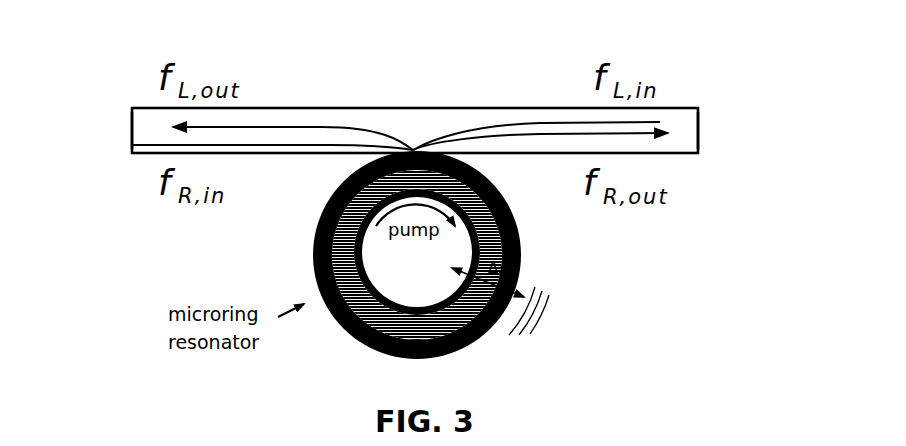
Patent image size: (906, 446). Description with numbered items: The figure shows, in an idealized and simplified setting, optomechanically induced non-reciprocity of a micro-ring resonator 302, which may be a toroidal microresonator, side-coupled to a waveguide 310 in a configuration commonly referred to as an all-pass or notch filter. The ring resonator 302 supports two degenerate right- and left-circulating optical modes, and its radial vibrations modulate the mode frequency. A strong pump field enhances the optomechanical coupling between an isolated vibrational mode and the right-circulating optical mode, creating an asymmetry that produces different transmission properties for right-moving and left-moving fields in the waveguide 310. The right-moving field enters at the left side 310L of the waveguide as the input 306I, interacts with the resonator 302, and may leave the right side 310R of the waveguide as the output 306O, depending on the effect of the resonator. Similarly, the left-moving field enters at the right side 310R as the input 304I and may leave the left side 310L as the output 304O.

The micro-ring resonator 302 is at (347, 338).
The waveguide 310 is at (422, 108).
The left side of the waveguide 310L is at (132, 127).
The right side of the waveguide 310R is at (698, 128).
The left-moving field output 304O is at (270, 123).
The left-moving field input 304I is at (545, 120).
The right-moving field input 306I is at (307, 150).
The right-moving field output 306O is at (513, 147).